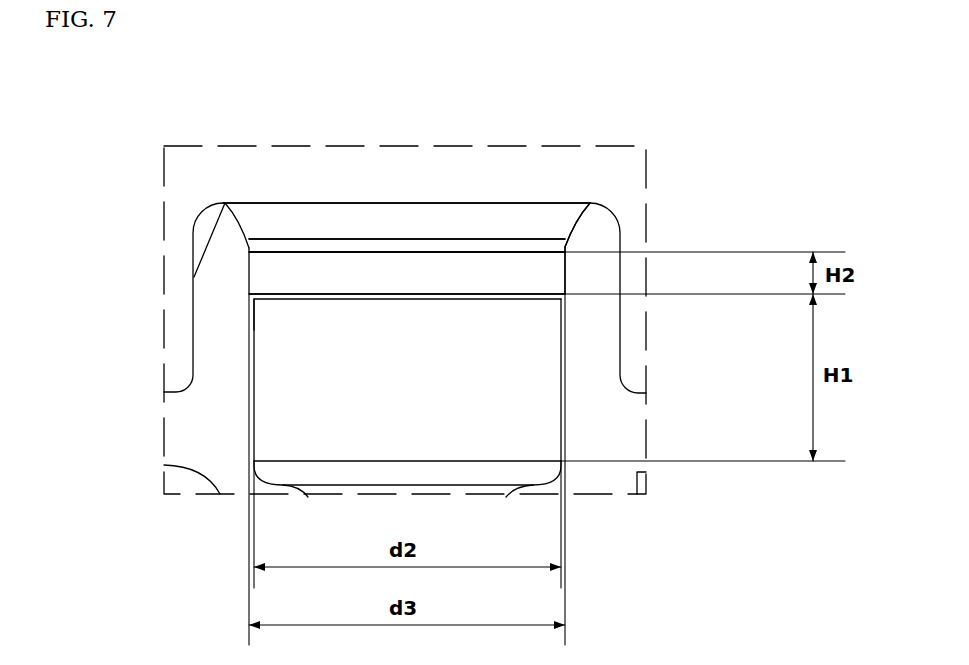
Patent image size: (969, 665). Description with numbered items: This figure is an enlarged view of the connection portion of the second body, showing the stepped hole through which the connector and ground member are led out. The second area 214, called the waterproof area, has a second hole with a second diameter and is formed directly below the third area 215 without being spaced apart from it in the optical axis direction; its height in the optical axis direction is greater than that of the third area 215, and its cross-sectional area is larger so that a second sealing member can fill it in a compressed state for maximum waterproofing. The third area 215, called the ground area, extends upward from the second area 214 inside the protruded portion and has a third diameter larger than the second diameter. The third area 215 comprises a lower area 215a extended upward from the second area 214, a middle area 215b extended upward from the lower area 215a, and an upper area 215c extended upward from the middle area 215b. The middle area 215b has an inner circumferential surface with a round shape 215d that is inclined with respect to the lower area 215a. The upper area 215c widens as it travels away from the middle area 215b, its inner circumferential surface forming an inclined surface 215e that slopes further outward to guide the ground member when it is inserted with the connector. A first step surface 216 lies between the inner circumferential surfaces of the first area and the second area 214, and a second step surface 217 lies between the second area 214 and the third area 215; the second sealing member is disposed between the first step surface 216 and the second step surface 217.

The second area 214 is at (298, 360).
The third area 215 is at (428, 280).
The lower area 215a is at (290, 275).
The middle area 215b is at (369, 247).
The upper area 215c is at (298, 218).
The round shape 215d is at (567, 245).
The inclined surface 215e is at (567, 245).
The first step surface 216 is at (282, 487).
The second step surface 217 is at (252, 297).